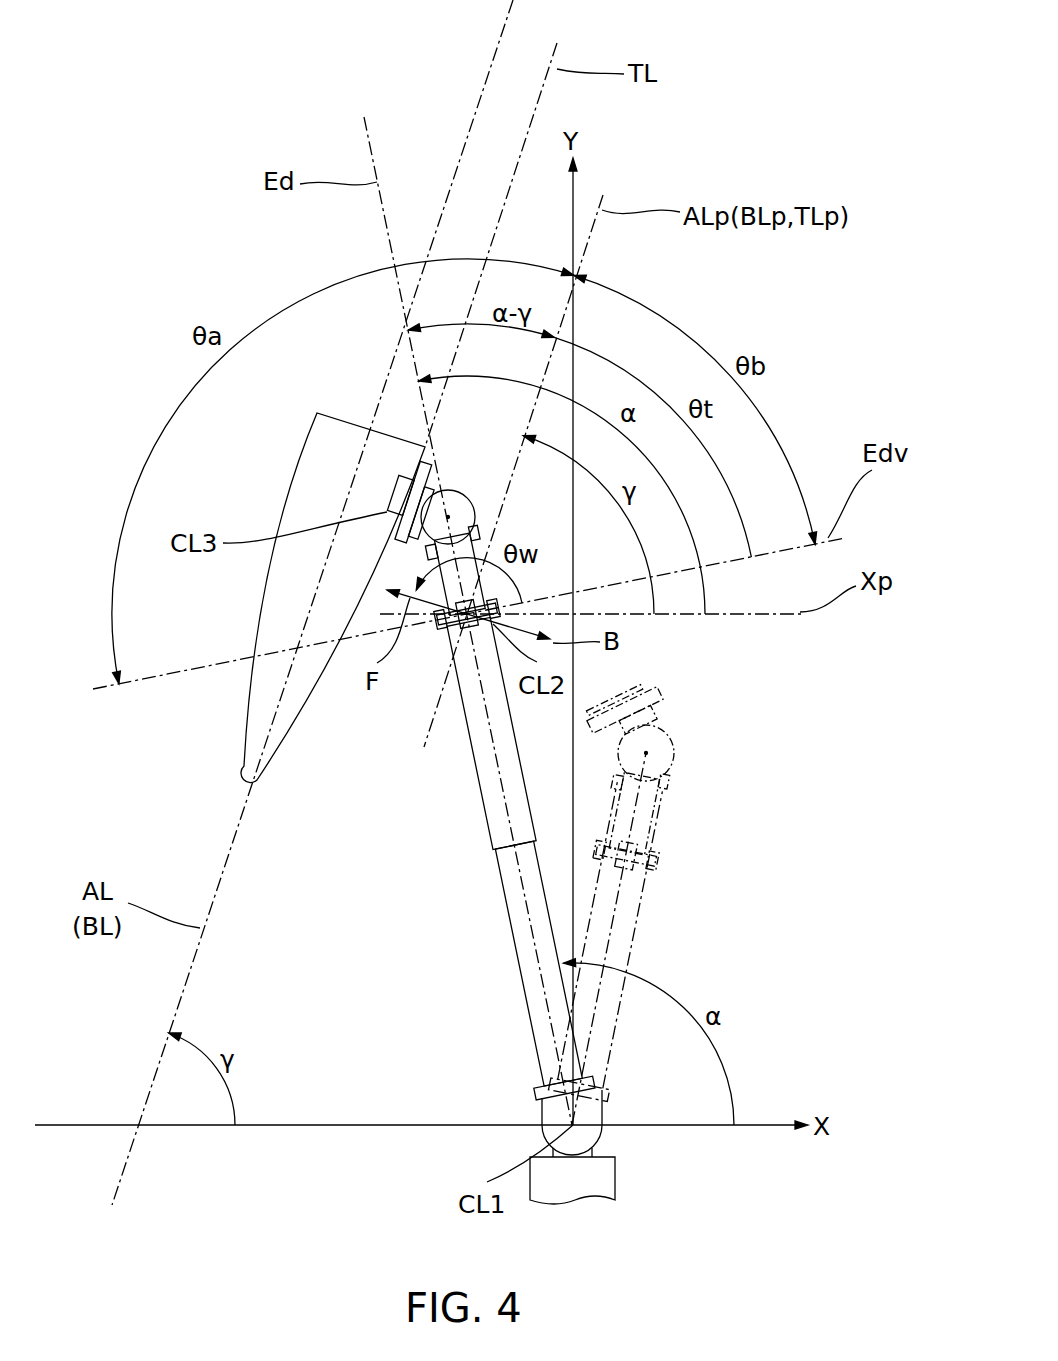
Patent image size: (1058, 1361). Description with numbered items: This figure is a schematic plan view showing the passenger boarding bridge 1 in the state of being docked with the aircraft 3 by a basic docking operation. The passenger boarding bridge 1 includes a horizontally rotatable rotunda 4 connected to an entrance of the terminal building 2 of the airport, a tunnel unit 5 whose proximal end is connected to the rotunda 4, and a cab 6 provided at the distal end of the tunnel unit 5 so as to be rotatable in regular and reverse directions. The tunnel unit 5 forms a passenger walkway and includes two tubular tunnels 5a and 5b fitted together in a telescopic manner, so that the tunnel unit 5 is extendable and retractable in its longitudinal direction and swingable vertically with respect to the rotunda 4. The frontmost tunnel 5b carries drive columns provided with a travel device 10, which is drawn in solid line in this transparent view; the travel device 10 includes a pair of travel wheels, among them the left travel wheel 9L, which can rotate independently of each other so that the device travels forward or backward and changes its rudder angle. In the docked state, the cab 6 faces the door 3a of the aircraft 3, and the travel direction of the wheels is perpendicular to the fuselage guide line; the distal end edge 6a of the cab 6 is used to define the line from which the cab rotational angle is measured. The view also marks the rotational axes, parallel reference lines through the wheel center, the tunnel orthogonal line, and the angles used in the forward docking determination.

The passenger boarding bridge 1 is at (365, 893).
The terminal building 2 is at (615, 1180).
The aircraft 3 is at (292, 510).
The door 3a is at (393, 483).
The rotunda 4 is at (537, 1100).
The tunnel unit 5 is at (355, 770).
The tunnel 5a is at (498, 875).
The tunnel 5b is at (490, 836).
The cab 6 is at (478, 513).
The distal end edge 6a is at (448, 517).
The left travel wheel 9L is at (467, 650).
The travel device 10 is at (437, 636).